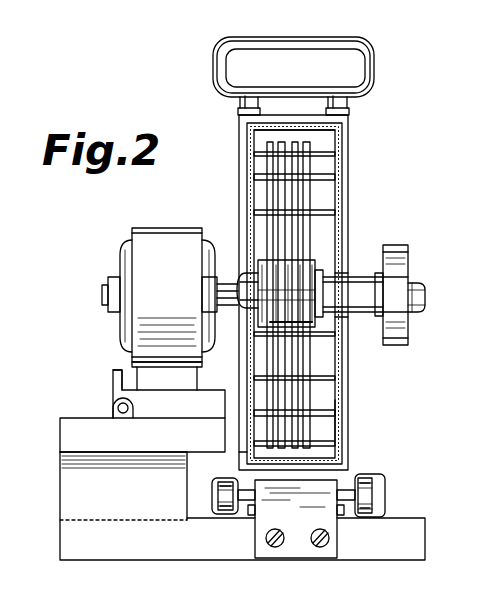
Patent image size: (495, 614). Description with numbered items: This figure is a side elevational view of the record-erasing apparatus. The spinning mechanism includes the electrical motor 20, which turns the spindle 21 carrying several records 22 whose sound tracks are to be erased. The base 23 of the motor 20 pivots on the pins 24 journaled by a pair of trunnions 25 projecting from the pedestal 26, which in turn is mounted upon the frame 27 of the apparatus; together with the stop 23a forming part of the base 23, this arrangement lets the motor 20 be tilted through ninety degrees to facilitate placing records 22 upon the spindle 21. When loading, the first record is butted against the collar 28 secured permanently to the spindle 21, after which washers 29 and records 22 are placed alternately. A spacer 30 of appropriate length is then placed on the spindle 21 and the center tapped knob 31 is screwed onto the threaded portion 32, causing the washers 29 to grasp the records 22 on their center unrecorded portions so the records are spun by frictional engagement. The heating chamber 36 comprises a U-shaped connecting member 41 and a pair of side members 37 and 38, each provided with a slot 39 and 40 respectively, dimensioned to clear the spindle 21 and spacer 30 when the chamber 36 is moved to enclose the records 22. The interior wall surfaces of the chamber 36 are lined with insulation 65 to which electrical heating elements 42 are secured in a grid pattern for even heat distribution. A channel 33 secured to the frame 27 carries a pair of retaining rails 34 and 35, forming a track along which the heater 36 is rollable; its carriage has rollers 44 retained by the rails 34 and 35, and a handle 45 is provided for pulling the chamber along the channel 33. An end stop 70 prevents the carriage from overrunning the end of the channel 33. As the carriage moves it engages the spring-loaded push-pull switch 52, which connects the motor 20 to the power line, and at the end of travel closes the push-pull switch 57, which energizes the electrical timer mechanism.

The electrical motor 20 is at (134, 236).
The spindle 21 is at (237, 304).
The records 22 is at (303, 172).
The base 23 is at (205, 398).
The stop 23a is at (112, 372).
The pins 24 is at (118, 405).
The trunnions 25 is at (120, 412).
The pedestal 26 is at (60, 462).
The frame 27 is at (82, 538).
The collar 28 is at (248, 248).
The washers 29 is at (308, 328).
The spacer 30 is at (355, 292).
The center tapped knob 31 is at (401, 263).
The threaded portion 32 is at (424, 290).
The channel 33 is at (367, 517).
The retaining rail 34 is at (212, 492).
The retaining rail 35 is at (372, 474).
The heating chamber 36 is at (351, 121).
The side member 37 is at (348, 207).
The side member 38 is at (245, 452).
The slot 39 is at (352, 317).
The slot 40 is at (245, 280).
The U-shaped connecting member 41 is at (268, 125).
The electrical heating elements 42 is at (296, 130).
The rollers 44 is at (223, 514).
The handle 45 is at (373, 53).
The push-pull switch 52 is at (253, 514).
The push-pull switch 57 is at (341, 517).
The insulation 65 is at (340, 420).
The end stop 70 is at (297, 547).